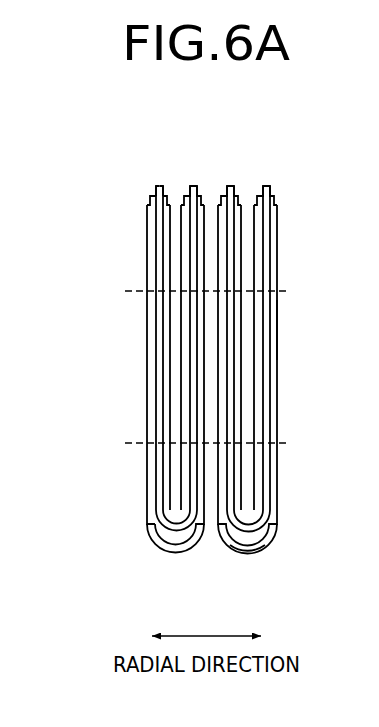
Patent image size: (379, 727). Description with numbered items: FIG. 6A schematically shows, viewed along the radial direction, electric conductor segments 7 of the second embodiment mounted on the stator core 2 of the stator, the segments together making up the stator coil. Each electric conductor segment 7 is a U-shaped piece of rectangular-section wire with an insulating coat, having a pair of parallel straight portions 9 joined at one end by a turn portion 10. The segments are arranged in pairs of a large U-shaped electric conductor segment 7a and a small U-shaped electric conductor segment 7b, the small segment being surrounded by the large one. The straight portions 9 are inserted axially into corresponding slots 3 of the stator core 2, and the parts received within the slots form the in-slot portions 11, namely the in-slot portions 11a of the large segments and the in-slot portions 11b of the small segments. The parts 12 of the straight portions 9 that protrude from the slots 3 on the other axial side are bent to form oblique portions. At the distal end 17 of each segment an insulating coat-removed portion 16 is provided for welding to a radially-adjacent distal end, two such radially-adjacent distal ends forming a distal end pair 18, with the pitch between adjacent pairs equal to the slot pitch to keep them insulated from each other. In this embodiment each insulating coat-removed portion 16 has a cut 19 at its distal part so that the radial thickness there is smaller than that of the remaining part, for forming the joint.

The stator core 2 is at (192, 375).
The slots 3 is at (143, 278).
The electric conductor segments 7 is at (211, 399).
The large U-shaped electric conductor segment 7a is at (218, 549).
The small U-shaped electric conductor segment 7b is at (237, 532).
The straight portions 9 is at (280, 328).
The turn portion 10 is at (251, 558).
The in-slot portions 11 is at (121, 369).
The in-slot portions of the large electric conductor segments 11a is at (146, 386).
The in-slot portions of the small electric conductor segments 11b is at (154, 413).
The protruding parts of the straight portions 12 is at (281, 402).
The insulating coat-removed portion 16 is at (279, 186).
The distal end 17 is at (151, 180).
The distal end pair 18 is at (163, 180).
The cut 19 is at (147, 190).